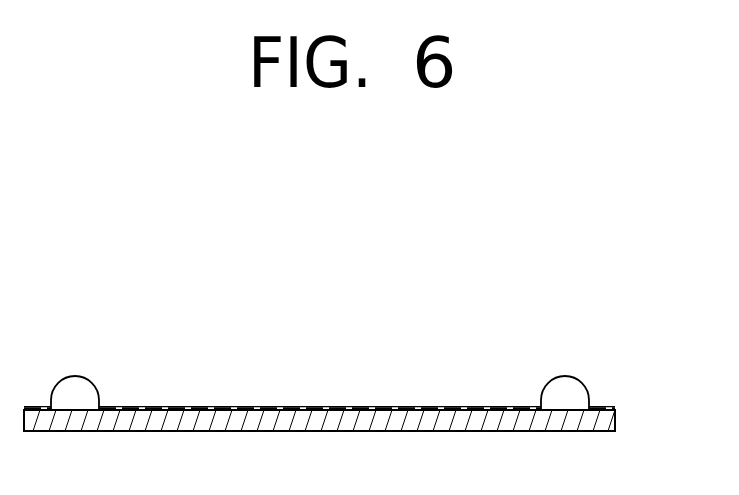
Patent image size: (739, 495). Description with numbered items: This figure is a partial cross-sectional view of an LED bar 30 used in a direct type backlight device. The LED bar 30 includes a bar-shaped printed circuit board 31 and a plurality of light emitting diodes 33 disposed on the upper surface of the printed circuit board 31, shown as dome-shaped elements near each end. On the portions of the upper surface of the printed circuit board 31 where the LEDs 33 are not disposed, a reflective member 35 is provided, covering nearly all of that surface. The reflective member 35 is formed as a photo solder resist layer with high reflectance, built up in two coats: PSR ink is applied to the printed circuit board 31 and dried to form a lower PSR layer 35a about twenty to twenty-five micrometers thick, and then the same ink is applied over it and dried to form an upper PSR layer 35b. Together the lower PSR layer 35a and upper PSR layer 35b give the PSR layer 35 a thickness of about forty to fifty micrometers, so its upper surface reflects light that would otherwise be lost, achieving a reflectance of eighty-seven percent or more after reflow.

The LED bar 30 is at (360, 319).
The printed circuit board 31 is at (200, 425).
The light emitting diodes 33 is at (74, 385).
The reflective member 35 is at (196, 407).
The lower PSR layer 35a is at (497, 409).
The upper PSR layer 35b is at (437, 407).